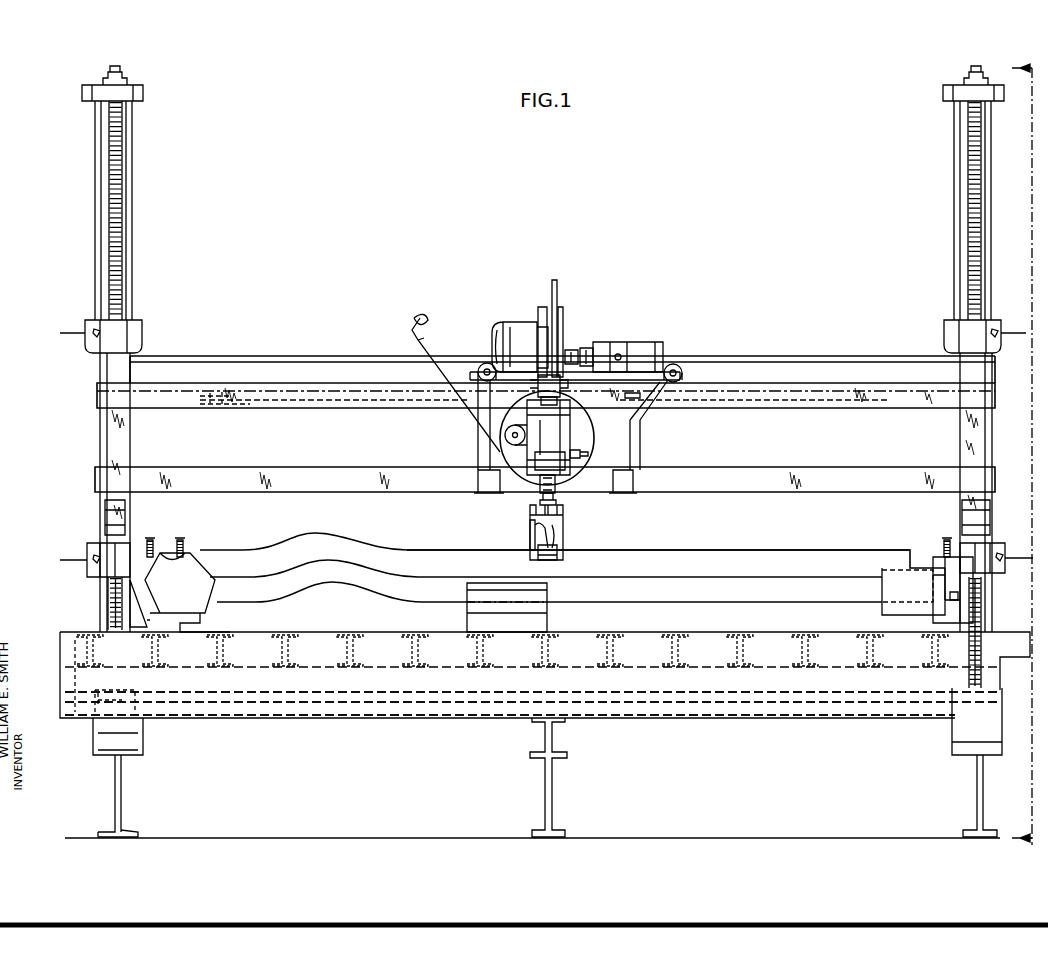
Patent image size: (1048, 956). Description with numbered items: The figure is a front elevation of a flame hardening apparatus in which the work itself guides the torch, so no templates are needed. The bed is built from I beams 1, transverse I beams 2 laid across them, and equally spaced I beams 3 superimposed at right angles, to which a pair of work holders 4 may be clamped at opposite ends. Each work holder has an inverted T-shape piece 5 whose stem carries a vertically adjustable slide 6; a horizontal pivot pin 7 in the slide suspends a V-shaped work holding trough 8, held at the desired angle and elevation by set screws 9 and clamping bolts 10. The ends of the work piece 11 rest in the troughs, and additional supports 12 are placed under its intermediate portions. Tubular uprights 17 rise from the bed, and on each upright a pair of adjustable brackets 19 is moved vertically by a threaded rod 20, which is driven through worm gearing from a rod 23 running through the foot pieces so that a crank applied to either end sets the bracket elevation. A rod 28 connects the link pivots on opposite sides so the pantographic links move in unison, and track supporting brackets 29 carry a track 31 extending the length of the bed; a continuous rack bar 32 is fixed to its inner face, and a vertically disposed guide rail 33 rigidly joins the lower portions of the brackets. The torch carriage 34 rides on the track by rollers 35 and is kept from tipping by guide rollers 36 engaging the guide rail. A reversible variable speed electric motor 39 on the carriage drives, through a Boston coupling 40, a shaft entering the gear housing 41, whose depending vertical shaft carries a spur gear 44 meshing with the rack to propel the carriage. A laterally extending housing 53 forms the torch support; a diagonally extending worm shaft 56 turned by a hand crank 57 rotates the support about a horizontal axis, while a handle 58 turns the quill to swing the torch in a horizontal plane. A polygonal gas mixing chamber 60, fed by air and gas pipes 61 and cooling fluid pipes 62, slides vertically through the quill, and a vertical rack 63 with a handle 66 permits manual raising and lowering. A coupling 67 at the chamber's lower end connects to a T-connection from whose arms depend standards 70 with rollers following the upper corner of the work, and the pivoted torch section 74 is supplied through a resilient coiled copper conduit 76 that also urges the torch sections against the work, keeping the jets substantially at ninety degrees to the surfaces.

The I beams 1 is at (552, 800).
The transverse I beams 2 is at (683, 710).
The equally spaced I beams 3 is at (690, 638).
The work holders 4 is at (926, 541).
The inverted T-shape piece 5 is at (145, 598).
The vertically adjustable slide 6 is at (950, 581).
The horizontal pivot pin 7 is at (168, 552).
The V-shaped work holding trough 8 is at (187, 592).
The set screws 9 is at (186, 544).
The clamping bolts 10 is at (958, 594).
The work piece 11 is at (437, 556).
The additional supports 12 is at (547, 615).
The tubular pedestals or uprights 17 is at (132, 192).
The adjustable brackets 19 is at (142, 335).
The threaded rod 20 is at (115, 220).
The rod 23 is at (806, 690).
The rod 28 is at (240, 356).
The track supporting bracket 29 is at (100, 423).
The track 31 is at (190, 408).
The rack bar 32 is at (285, 402).
The guide rail 33 is at (338, 470).
The flame treating torch carriage 34 is at (641, 441).
The rollers 35 is at (489, 362).
The guide rollers 36 is at (478, 490).
The reversible variable speed electric motor 39 is at (530, 322).
The Boston coupling 40 is at (582, 348).
The gear housing 41 is at (631, 342).
The spur gear 44 is at (630, 395).
The laterally extending housing 53 is at (572, 421).
The diagonally extending shaft 56 is at (540, 384).
The hand crank 57 is at (422, 320).
The handle 58 is at (512, 437).
The gas mixing chamber 60 is at (545, 390).
The air and gas pipes 61 is at (563, 308).
The cooling fluid pipes 62 is at (555, 282).
The vertical rack 63 is at (540, 490).
The handle 66 is at (580, 458).
The coupling 67 is at (556, 498).
The standard 70 is at (565, 537).
The torch section 74 is at (545, 552).
The resilient copper coiled conduit 76 is at (530, 532).